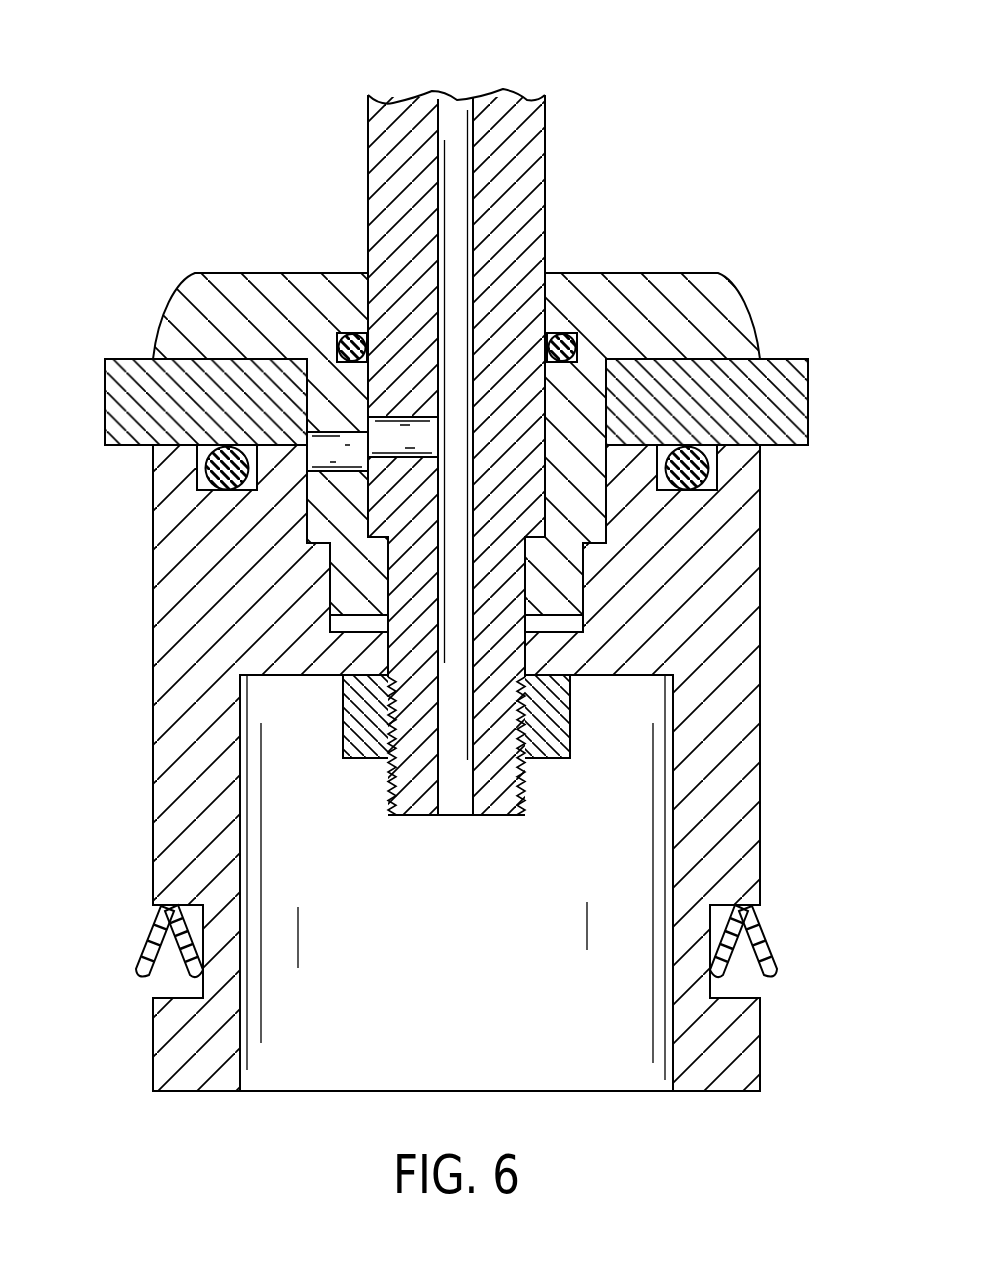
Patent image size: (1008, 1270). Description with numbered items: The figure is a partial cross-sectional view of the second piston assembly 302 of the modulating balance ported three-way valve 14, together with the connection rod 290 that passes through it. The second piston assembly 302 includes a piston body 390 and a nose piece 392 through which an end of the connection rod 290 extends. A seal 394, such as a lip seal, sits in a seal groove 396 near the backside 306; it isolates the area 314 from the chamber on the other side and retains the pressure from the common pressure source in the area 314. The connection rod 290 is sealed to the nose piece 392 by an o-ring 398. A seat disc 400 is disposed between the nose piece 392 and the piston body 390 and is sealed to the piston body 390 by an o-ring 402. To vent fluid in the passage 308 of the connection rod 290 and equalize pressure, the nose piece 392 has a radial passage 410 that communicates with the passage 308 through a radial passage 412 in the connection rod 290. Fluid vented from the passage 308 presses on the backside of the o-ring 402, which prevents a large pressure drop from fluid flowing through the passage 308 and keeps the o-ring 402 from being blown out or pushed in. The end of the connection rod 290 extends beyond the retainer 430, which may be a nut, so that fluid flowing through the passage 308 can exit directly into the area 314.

The modulating balance ported three-way valve 14 is at (455, 589).
The connection rod 290 is at (471, 414).
The second piston assembly 302 is at (455, 804).
The backside 306 is at (210, 1093).
The passage 308 is at (452, 110).
The area 314 is at (501, 1013).
The piston body 390 is at (760, 672).
The nose piece 392 is at (705, 272).
The seal 394 is at (775, 945).
The seal groove 396 is at (748, 986).
The o-ring 398 is at (563, 335).
The seat disc 400 is at (782, 359).
The o-ring 402 is at (703, 462).
The radial passage 410 is at (318, 458).
The radial passage 412 is at (402, 432).
The retainer 430 is at (567, 760).